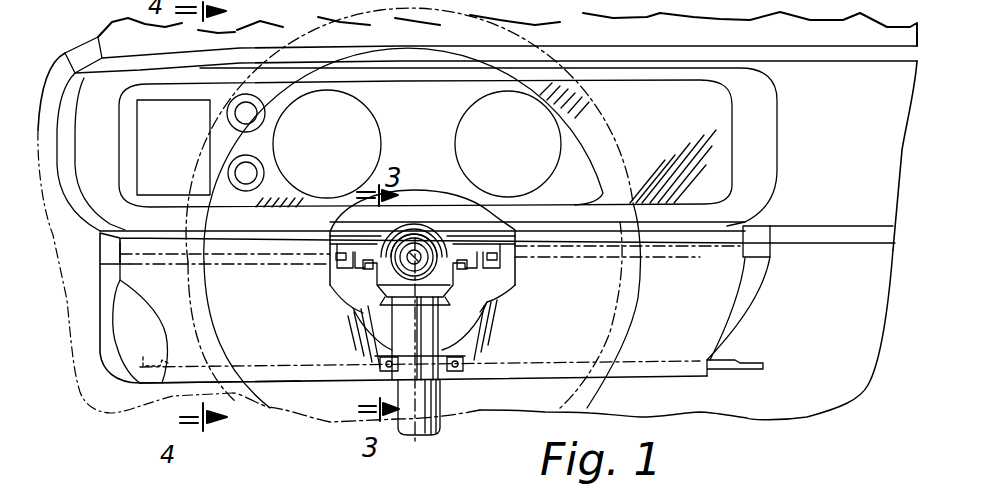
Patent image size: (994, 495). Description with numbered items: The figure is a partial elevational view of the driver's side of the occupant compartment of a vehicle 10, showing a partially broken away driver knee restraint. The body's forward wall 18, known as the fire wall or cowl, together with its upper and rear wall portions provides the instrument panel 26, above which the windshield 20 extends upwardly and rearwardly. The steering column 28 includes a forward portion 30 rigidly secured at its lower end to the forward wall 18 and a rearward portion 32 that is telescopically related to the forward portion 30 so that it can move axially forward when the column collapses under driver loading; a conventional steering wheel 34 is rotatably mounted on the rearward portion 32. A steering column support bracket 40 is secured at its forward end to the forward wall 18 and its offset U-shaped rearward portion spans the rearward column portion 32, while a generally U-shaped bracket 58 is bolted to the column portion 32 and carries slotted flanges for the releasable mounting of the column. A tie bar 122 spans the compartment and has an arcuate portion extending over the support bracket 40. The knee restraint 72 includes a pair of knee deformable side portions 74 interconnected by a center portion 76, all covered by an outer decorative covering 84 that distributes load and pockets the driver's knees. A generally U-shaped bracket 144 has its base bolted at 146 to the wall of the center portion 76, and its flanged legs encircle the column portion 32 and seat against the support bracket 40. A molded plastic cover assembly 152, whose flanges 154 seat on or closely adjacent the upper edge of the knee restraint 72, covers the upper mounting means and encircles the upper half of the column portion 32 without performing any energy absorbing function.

The vehicle 10 is at (910, 190).
The forward wall 18 is at (893, 335).
The windshield 20 is at (605, 35).
The instrument panel 26 is at (912, 139).
The steering column 28 is at (440, 232).
The forward portion of the column 30 is at (446, 407).
The rearward portion of the column 32 is at (430, 315).
The steering wheel 34 is at (603, 137).
The steering column support bracket 40 is at (399, 223).
The U-shaped bracket 58 is at (397, 302).
The knee restraint 72 is at (652, 380).
The knee deformable side portions 74 is at (687, 348).
The center portion 76 is at (472, 363).
The outer decorative covering 84 is at (723, 282).
The tie bar 122 is at (431, 222).
The U-shaped bracket 144 is at (335, 272).
The bolts 146 is at (383, 362).
The cover assembly 152 is at (733, 230).
The flanges of the cover assembly 154 is at (222, 250).